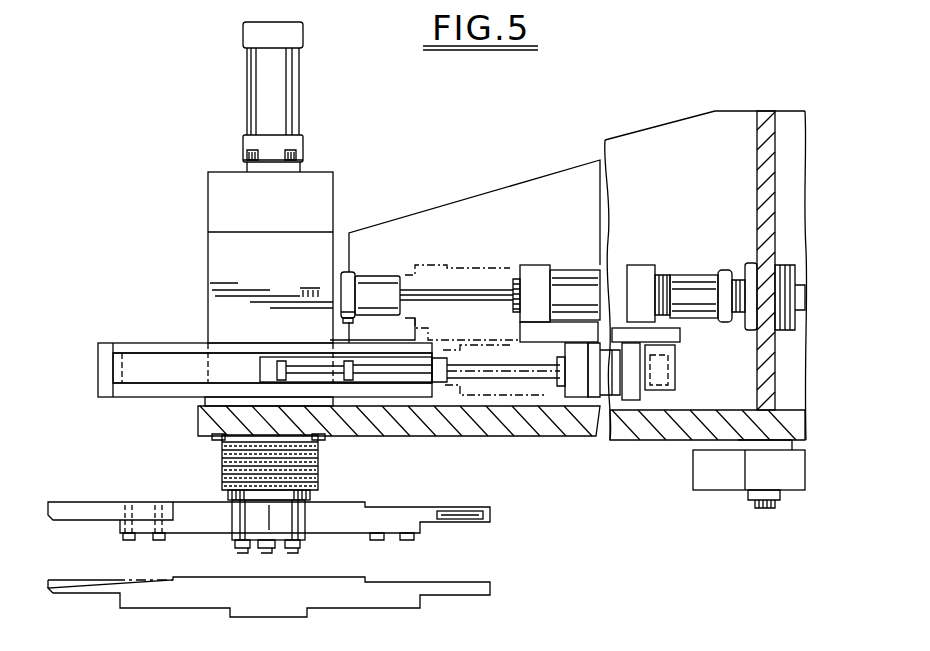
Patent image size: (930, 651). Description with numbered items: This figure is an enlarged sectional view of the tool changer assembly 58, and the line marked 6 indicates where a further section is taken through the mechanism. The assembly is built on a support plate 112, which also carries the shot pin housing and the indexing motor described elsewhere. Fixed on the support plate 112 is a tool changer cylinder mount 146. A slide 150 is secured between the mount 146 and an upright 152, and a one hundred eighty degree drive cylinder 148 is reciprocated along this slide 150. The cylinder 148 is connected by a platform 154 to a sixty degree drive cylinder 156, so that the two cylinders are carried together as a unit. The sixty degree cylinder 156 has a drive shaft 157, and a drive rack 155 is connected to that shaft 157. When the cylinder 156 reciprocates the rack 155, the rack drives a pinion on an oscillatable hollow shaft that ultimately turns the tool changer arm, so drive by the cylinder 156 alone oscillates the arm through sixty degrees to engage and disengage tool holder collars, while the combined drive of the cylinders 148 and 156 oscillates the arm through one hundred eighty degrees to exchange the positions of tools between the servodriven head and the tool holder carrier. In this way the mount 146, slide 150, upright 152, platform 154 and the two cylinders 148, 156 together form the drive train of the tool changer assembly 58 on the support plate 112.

The tool changer cylinder mount 146 is at (211, 262).
The 180° drive cylinder 148 is at (573, 275).
The slide 150 is at (162, 347).
The upright 152 is at (173, 376).
The platform 154 is at (320, 247).
The drive rack 155 is at (381, 374).
The 60° drive cylinder 156 is at (612, 420).
The drive shaft 157 is at (492, 374).
The support plate 112 is at (567, 432).
The tool changer assembly 58 is at (458, 528).
The section line 6- 6 is at (160, 500).